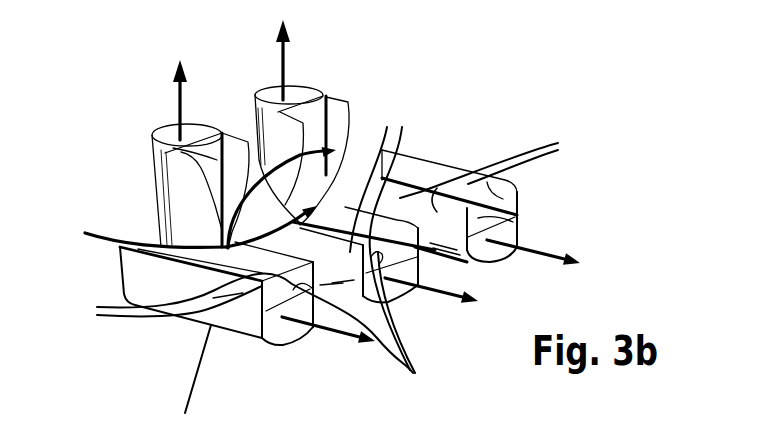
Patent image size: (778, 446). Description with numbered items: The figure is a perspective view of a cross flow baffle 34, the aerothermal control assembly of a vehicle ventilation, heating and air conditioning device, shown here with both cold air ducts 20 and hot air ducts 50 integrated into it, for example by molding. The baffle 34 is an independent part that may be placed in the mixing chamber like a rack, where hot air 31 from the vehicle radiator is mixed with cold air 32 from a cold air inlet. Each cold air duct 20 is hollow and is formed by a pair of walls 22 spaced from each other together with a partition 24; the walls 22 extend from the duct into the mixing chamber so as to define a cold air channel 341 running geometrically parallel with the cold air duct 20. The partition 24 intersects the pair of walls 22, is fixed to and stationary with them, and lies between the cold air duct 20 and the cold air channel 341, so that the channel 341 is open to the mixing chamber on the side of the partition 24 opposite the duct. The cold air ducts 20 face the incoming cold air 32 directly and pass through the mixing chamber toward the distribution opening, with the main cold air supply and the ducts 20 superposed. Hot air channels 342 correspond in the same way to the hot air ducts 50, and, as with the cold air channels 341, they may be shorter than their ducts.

The cold air duct 20 is at (300, 332).
The pair of walls 22 is at (326, 239).
The partition 24 is at (615, 237).
The hot air 31 is at (195, 366).
The cold air 32 is at (113, 233).
The cross flow baffle 34 is at (437, 130).
The cold air channel 341 is at (263, 338).
The hot air channel 342 is at (187, 152).
The hot air duct 50 is at (164, 132).